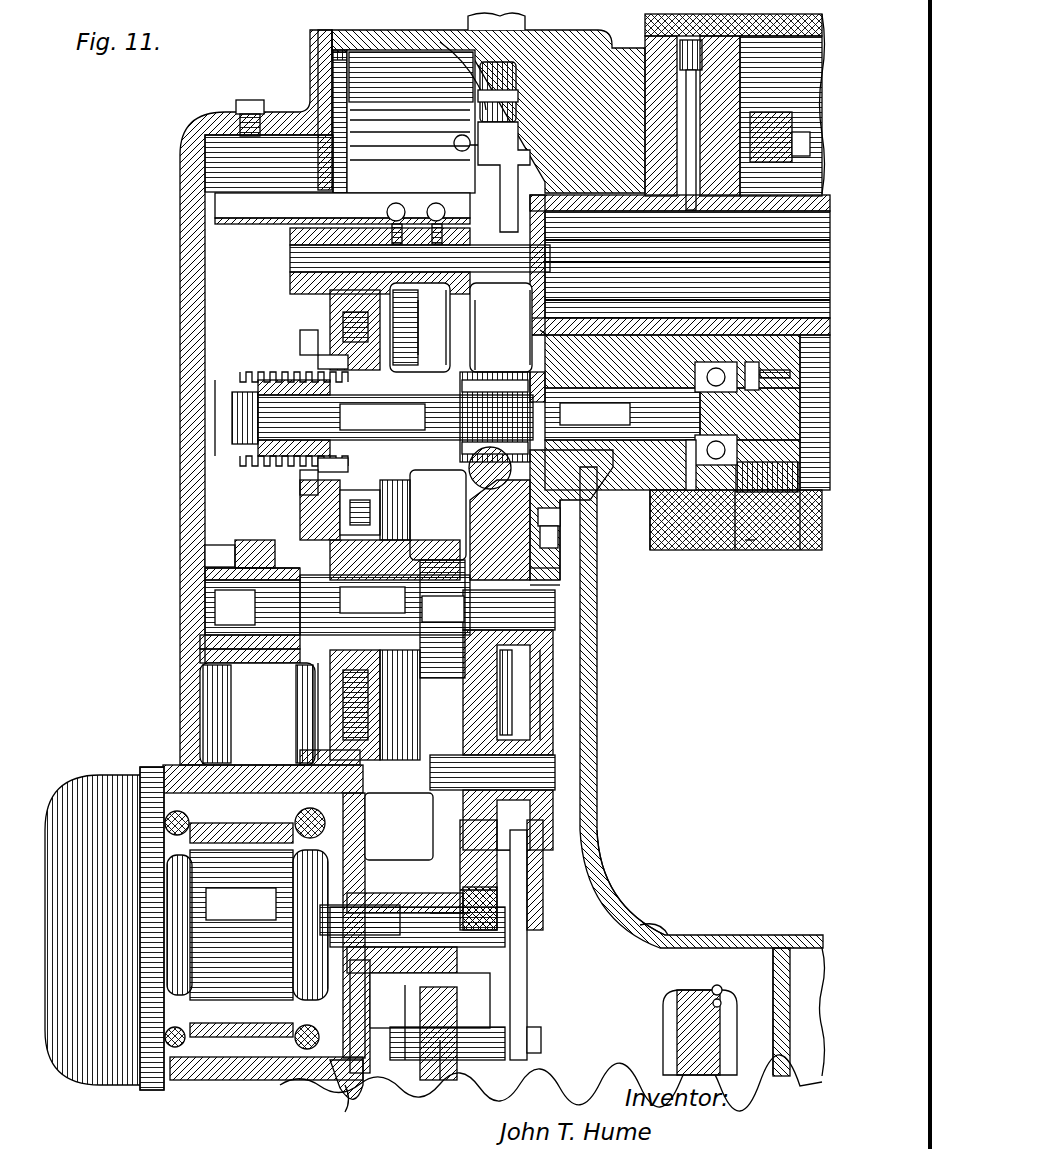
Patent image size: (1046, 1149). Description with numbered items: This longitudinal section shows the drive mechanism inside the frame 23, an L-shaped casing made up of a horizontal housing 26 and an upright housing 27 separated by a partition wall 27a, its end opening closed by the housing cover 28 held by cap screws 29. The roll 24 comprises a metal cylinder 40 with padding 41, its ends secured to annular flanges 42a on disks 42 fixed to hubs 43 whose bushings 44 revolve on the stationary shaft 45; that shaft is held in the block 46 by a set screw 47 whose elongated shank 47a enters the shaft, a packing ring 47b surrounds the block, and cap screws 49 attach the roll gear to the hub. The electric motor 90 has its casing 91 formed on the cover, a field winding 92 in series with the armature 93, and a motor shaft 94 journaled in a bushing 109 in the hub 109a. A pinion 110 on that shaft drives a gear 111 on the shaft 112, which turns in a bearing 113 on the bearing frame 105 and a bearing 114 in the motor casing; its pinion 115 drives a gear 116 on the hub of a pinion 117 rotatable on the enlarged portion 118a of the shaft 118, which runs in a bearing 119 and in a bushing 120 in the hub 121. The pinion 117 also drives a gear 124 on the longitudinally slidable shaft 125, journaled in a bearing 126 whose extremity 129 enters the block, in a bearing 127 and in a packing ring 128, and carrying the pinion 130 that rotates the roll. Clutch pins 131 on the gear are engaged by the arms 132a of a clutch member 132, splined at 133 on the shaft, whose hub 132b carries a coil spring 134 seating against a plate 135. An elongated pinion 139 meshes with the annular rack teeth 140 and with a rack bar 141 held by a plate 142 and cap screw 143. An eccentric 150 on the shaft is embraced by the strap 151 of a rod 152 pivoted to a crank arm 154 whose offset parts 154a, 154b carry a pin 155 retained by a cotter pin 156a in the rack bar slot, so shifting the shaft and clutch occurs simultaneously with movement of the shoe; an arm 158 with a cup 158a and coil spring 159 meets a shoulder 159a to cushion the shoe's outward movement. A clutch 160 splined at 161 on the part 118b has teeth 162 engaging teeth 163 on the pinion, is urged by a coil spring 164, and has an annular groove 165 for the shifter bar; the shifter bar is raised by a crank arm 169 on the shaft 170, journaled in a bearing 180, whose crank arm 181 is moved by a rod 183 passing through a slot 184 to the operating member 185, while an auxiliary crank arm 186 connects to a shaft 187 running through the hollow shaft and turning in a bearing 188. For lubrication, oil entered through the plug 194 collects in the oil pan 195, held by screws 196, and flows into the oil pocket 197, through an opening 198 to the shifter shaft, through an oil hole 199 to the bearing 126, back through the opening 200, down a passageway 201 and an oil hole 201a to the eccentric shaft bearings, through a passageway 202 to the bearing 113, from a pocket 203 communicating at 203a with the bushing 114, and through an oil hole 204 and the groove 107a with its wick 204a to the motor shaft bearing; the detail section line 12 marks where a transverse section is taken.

The section line 12 is at (499, 327).
The frame 23 is at (646, 898).
The rotatable roll 24 is at (800, 515).
The horizontal housing 26 is at (803, 946).
The upwardly extending housing 27 is at (600, 710).
The partition wall 27a is at (770, 960).
The housing cover 28 is at (178, 272).
The cap screws 29 is at (312, 62).
The metal cylinder 40 is at (770, 550).
The padding 41 is at (718, 512).
The disks 42 is at (742, 518).
The annular flanges 42a is at (745, 550).
The hubs 43 is at (792, 325).
The bushings 44 is at (746, 325).
The stationary shaft 45 is at (630, 325).
The block 46 is at (676, 325).
The set screw 47 is at (648, 55).
The elongated shank 47a is at (676, 118).
The packing ring 47b is at (690, 548).
The cap screws 49 is at (762, 125).
The electric motor 90 is at (102, 930).
The motor casing 91 is at (215, 770).
The field winding 92 is at (175, 823).
The armature 93 is at (247, 930).
The motor shaft 94 is at (345, 918).
The bearing frame 105 is at (568, 677).
The annular groove 107a is at (480, 890).
The bushing 109 is at (310, 1062).
The hub 109a is at (345, 1100).
The pinion 110 is at (460, 944).
The gear 111 is at (505, 920).
The shaft 112 is at (555, 770).
The bearing 113 is at (555, 798).
The bearing 114 is at (402, 832).
The pinion 115 is at (398, 802).
The gear 116 is at (375, 738).
The pinion 117 is at (330, 545).
The shaft 118 is at (553, 625).
The enlarged portion 118a is at (385, 605).
The enlarged part 118b is at (218, 658).
The bearing 119 is at (560, 585).
The bushing 120 is at (215, 605).
The hub 121 is at (220, 632).
The gear 124 is at (322, 298).
The shaft 125 is at (395, 417).
The bearing 126 is at (501, 335).
The bearing 127 is at (578, 482).
The packing ring 128 is at (696, 405).
The bearing extremity 129 is at (537, 371).
The pinion 130 is at (742, 413).
The clutch pins 131 is at (328, 325).
The clutch member 132 is at (290, 375).
The arms 132a is at (320, 355).
The hub 132b is at (235, 395).
The splines 133 is at (262, 414).
The coil spring 134 is at (240, 380).
The plate 135 is at (258, 410).
The elongated pinion 139 is at (469, 468).
The annular rack teeth 140 is at (490, 372).
The rack bar 141 is at (365, 990).
The plate 142 is at (560, 548).
The cap screw 143 is at (562, 530).
The eccentric 150 is at (443, 619).
The eccentric strap 151 is at (470, 525).
The rod 152 is at (520, 850).
The crank arm 154 is at (440, 1045).
The offset part 154a is at (405, 1012).
The offset part 154b is at (470, 1002).
The pin 155 is at (515, 1040).
The cotter pin 156a is at (528, 1048).
The arm 158 is at (625, 1083).
The cup 158a is at (666, 1022).
The coil spring 159 is at (742, 972).
The shoulder 159a is at (676, 930).
The clutch 160 is at (215, 545).
The splines 161 is at (305, 660).
The clutch teeth 162 is at (300, 555).
The clutch teeth 163 is at (320, 663).
The coil spring 164 is at (235, 555).
The annular groove 165 is at (262, 545).
The crank arm 169 is at (318, 232).
The shaft 170 is at (292, 258).
The bearing 180 is at (400, 295).
The crank arm 181 is at (478, 185).
The rod 183 is at (440, 42).
The elongated slot 184 is at (516, 100).
The operating member 185 is at (526, 28).
The auxiliary crank arm 186 is at (540, 170).
The shaft 187 is at (525, 327).
The bearing 188 is at (535, 330).
The plug 194 is at (236, 108).
The oil pan 195 is at (232, 212).
The screws 196 is at (392, 213).
The oil pocket 197 is at (432, 327).
The opening 198 is at (418, 222).
The oil hole 199 is at (430, 365).
The opening 200 is at (566, 487).
The passageway 201 is at (562, 568).
The oil hole 201a is at (215, 565).
The oil passageway 202 is at (540, 720).
The oil pocket 203 is at (228, 750).
The communication 203a is at (318, 770).
The oil hole 204 is at (500, 875).
The wick 204a is at (470, 918).